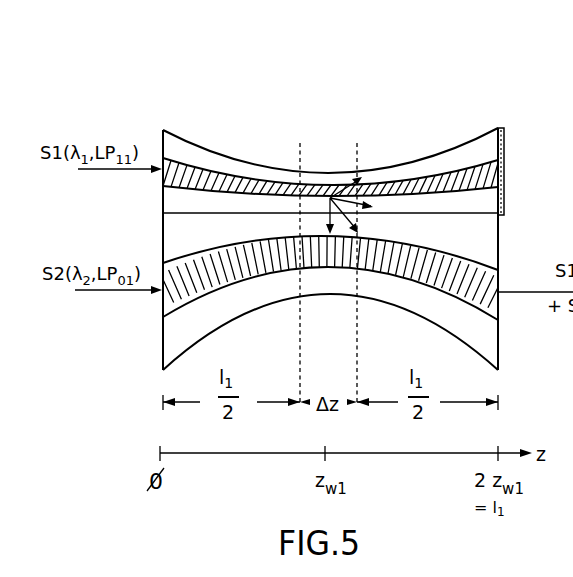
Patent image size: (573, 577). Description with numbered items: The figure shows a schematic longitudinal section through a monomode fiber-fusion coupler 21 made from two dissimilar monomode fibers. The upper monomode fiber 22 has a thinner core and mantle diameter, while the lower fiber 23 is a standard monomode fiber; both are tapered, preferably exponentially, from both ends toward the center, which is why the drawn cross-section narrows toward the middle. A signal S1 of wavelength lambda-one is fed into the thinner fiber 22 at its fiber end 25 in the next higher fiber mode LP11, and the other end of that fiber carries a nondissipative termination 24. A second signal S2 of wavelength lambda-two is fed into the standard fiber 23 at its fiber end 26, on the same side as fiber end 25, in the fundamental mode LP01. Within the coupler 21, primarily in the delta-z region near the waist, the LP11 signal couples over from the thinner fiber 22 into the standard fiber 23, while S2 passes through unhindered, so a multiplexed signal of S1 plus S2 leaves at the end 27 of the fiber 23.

The monomode fiber-fusion coupler 21 is at (331, 120).
The monomode fiber 22 is at (197, 141).
The standard monomode fiber 23 is at (172, 343).
The nondissipative termination 24 is at (505, 143).
The fiber end 25 is at (162, 177).
The fiber end 26 is at (161, 306).
The end of the fiber 27 is at (501, 264).